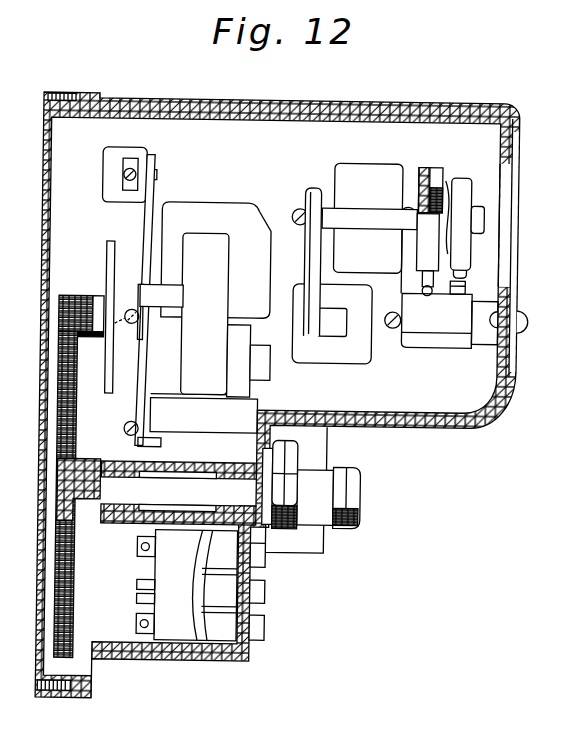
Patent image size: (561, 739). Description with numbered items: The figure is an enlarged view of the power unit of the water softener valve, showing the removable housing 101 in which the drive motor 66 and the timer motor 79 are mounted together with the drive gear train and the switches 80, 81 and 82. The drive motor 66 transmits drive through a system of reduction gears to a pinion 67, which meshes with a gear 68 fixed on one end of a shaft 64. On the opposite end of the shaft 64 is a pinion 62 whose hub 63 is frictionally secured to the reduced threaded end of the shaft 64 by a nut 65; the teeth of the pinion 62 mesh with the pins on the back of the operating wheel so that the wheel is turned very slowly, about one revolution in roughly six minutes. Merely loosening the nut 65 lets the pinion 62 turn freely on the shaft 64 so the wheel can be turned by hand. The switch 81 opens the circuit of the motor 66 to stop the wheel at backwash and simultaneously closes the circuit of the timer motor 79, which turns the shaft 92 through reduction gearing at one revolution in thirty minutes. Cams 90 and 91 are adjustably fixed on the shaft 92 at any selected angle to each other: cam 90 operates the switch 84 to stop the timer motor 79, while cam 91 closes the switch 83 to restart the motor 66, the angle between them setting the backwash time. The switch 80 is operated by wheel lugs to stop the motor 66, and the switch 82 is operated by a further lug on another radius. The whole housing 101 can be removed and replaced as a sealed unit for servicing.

The pinion 62 is at (302, 436).
The hub 63 is at (311, 516).
The shaft 64 is at (186, 476).
The nut 65 is at (347, 524).
The drive motor 66 is at (194, 206).
The pinion 67 is at (74, 294).
The gear 68 is at (77, 407).
The timer motor 79 is at (364, 160).
The switch 80 is at (279, 560).
The switch 81 is at (279, 591).
The switch 82 is at (279, 623).
The switch 83 is at (458, 288).
The switch 84 is at (424, 290).
The cam 90 is at (415, 270).
The cam 91 is at (468, 262).
The shaft 92 is at (487, 210).
The housing 101 is at (418, 420).